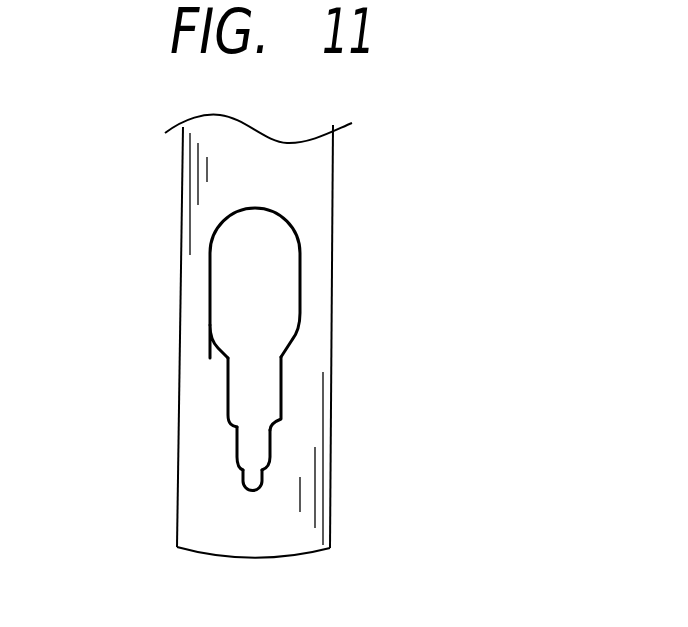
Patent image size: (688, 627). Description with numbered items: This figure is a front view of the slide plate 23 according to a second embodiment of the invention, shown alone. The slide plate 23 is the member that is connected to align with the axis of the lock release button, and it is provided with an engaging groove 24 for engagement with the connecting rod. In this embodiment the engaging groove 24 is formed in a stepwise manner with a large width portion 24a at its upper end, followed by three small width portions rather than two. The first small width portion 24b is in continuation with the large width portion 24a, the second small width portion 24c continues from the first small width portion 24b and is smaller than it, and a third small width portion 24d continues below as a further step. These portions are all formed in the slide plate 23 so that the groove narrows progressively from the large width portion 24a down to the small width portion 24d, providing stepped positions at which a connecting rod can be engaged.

The slide plate 23 is at (317, 207).
The engaging groove 24 is at (262, 349).
The large width portion 24a is at (300, 297).
The first small width portion 24b is at (281, 378).
The second small width portion 24c is at (270, 428).
The third small width portion 24d is at (262, 468).